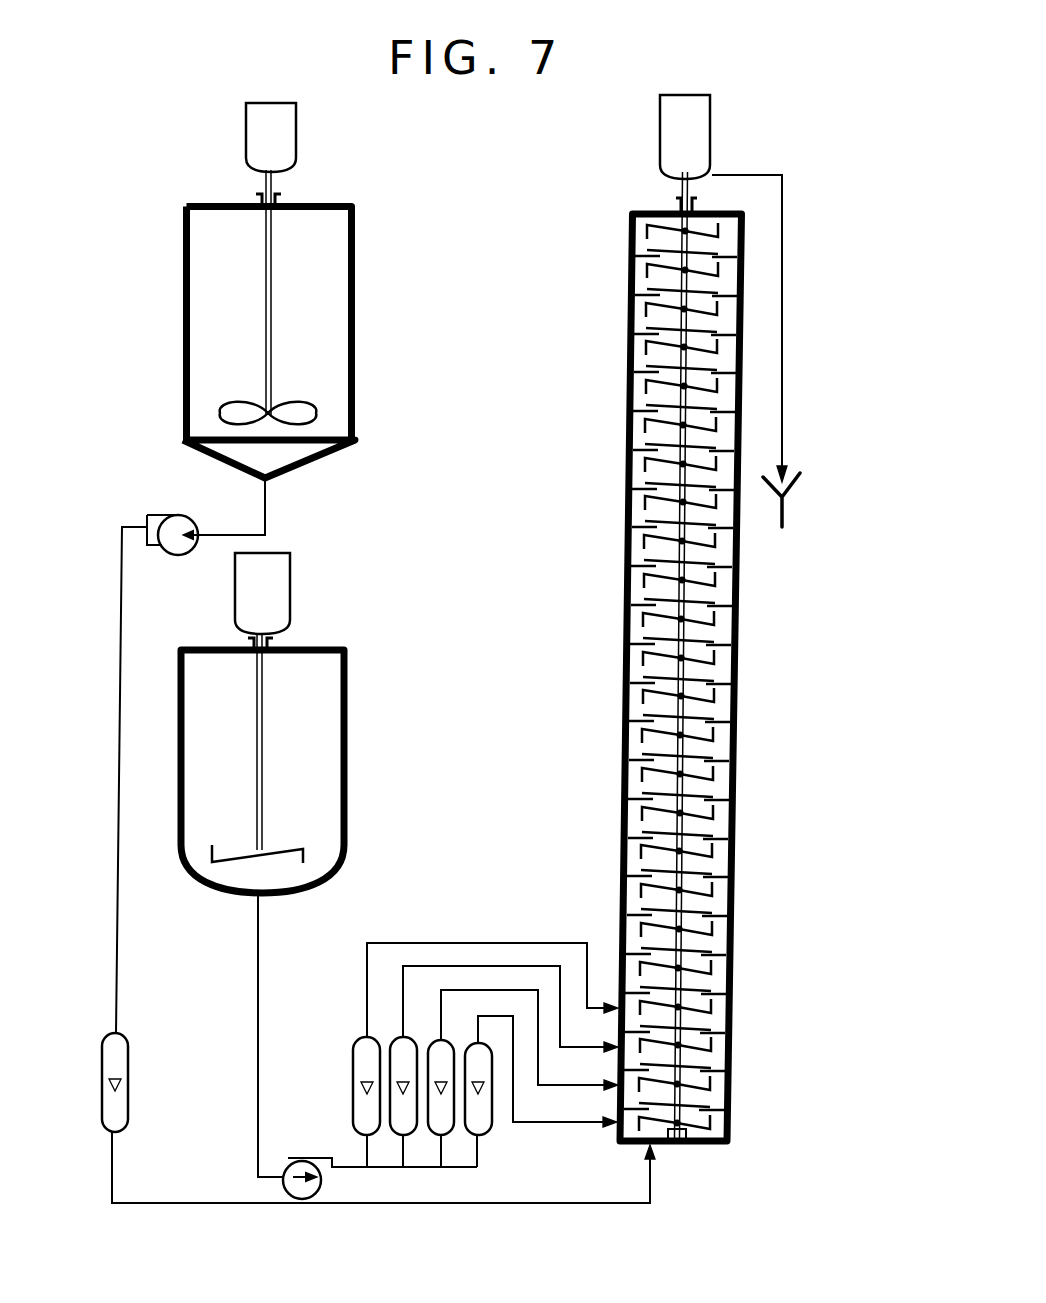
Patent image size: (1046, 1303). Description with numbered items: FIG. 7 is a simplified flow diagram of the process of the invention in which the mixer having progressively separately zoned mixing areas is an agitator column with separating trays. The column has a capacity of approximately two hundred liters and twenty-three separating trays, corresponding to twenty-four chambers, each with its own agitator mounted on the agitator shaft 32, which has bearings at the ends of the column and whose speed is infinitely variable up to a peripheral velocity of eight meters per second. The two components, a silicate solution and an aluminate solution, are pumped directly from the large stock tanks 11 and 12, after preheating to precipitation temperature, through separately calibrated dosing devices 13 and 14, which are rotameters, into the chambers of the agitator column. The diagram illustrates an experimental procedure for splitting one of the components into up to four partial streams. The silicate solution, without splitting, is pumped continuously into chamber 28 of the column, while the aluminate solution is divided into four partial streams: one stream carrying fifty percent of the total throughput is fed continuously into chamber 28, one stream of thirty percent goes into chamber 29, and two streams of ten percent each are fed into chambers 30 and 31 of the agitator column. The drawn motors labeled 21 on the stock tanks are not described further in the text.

The stock tank 11 is at (207, 292).
The stock tank 12 is at (344, 750).
The dosing devices 13 is at (405, 1040).
The dosing device 14 is at (112, 1100).
The stirrer motor 21 is at (296, 128).
The chamber 28 is at (718, 1128).
The chamber 29 is at (722, 1093).
The chamber 30 is at (722, 1055).
The chamber 31 is at (720, 1013).
The agitator shaft 32 is at (710, 118).